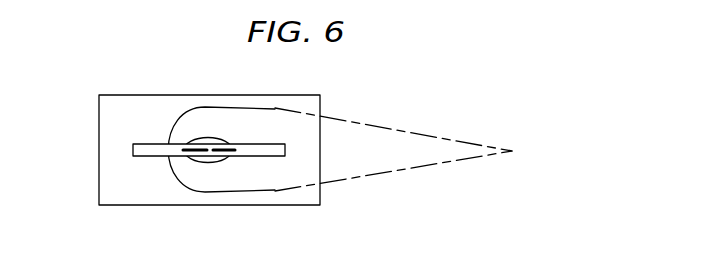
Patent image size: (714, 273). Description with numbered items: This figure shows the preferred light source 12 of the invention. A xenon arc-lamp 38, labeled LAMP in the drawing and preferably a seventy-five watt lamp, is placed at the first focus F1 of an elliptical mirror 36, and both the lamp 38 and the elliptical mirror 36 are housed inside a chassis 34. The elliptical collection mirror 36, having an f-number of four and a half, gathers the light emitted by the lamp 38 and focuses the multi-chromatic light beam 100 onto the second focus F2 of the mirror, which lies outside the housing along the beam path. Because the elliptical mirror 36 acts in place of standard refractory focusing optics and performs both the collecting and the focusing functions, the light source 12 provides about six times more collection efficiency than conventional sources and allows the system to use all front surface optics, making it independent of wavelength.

The light source 12 is at (164, 70).
The housing 34 is at (274, 206).
The elliptical mirror 36 is at (173, 169).
The xenon arc-lamp 38 is at (219, 161).
The lamp LAMP is at (133, 147).
The first focus of the elliptical mirror F1 is at (208, 152).
The second focus of the elliptical mirror F2 is at (513, 152).
The multi-chromatic light beam 100 is at (390, 129).